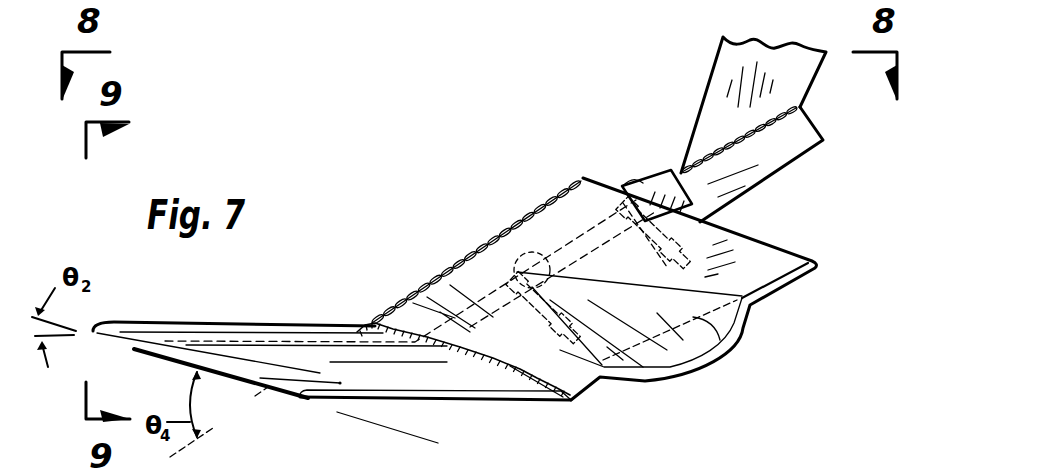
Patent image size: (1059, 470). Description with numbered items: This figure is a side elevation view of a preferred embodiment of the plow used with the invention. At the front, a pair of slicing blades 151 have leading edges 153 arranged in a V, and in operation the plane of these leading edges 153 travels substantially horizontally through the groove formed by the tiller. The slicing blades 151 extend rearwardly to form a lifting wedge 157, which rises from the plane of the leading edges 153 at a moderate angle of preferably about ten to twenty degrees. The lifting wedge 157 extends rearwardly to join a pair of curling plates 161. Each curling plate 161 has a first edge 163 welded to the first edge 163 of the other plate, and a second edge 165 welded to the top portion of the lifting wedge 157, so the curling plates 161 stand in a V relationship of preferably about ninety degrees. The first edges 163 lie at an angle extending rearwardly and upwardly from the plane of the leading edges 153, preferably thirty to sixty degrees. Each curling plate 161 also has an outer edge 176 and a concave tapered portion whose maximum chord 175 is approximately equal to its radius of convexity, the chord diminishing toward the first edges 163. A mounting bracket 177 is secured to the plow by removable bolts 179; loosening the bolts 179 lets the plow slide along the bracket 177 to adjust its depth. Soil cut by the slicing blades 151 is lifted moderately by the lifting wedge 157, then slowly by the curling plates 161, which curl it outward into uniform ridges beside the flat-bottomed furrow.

The slicing blade 151 is at (273, 372).
The leading edge 153 is at (170, 350).
The lifting wedge 157 is at (310, 363).
The curling plate 161 is at (643, 345).
The first edge 163 is at (483, 243).
The second edge 165 is at (510, 370).
The maximum chord 175 is at (740, 328).
The outer edge 176 is at (795, 284).
The mounting bracket 177 is at (693, 188).
The removable bolt 179 is at (640, 182).